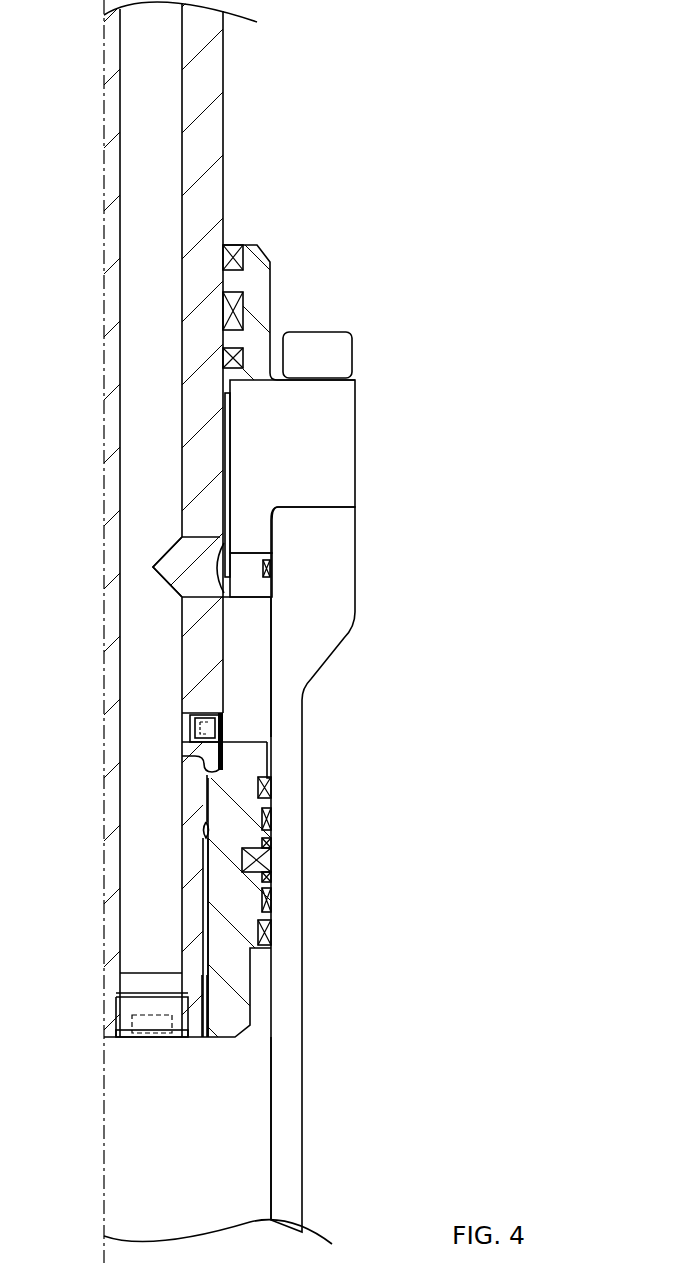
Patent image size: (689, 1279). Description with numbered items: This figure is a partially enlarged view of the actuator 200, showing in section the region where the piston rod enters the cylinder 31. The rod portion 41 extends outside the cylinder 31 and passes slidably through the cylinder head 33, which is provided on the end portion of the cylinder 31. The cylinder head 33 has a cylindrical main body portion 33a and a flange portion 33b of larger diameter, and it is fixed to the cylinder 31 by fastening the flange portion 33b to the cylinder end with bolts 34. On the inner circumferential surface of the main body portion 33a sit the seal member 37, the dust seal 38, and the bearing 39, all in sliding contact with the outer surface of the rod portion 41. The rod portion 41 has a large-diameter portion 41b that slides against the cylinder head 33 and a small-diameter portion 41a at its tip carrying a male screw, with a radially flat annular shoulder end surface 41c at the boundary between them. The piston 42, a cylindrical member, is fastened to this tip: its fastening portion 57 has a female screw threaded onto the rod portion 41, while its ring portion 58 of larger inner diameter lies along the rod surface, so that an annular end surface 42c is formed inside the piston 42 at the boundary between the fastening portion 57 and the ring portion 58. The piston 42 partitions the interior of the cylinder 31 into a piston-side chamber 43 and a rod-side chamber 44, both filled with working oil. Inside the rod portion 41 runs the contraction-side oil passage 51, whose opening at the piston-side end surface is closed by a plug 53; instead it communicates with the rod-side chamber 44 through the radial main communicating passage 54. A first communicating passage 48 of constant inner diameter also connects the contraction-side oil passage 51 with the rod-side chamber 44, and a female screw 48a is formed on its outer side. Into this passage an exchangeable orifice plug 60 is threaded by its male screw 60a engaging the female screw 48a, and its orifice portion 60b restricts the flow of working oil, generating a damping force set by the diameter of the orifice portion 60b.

The actuator 200 is at (333, 56).
The rod portion 41 is at (230, 85).
The large-diameter portion 41b is at (205, 147).
The small-diameter portion 41a is at (262, 860).
The annular shoulder end surface 41c is at (206, 779).
The contraction-side oil passage 51 is at (160, 199).
The dust seal 38 is at (244, 257).
The seal member 37 is at (244, 314).
The bolt 34 is at (335, 352).
The bearing 39 is at (231, 423).
The cylinder head 33 is at (353, 488).
The flange portion 33b is at (325, 470).
The main body portion 33a is at (275, 520).
The main communicating passage 54 is at (190, 567).
The rod-side chamber 44 is at (248, 626).
The orifice plug 60 is at (214, 715).
The orifice portion 60b is at (224, 737).
The male screw 60a is at (226, 746).
The ring portion 58 is at (264, 787).
The first communicating passage 48 is at (190, 736).
The female screw 48a is at (195, 722).
The annular end surface 42c is at (203, 758).
The fastening portion 57 is at (265, 927).
The plug 53 is at (168, 1010).
The piston 42 is at (253, 1033).
The piston-side chamber 43 is at (240, 1097).
The cylinder 31 is at (285, 1198).